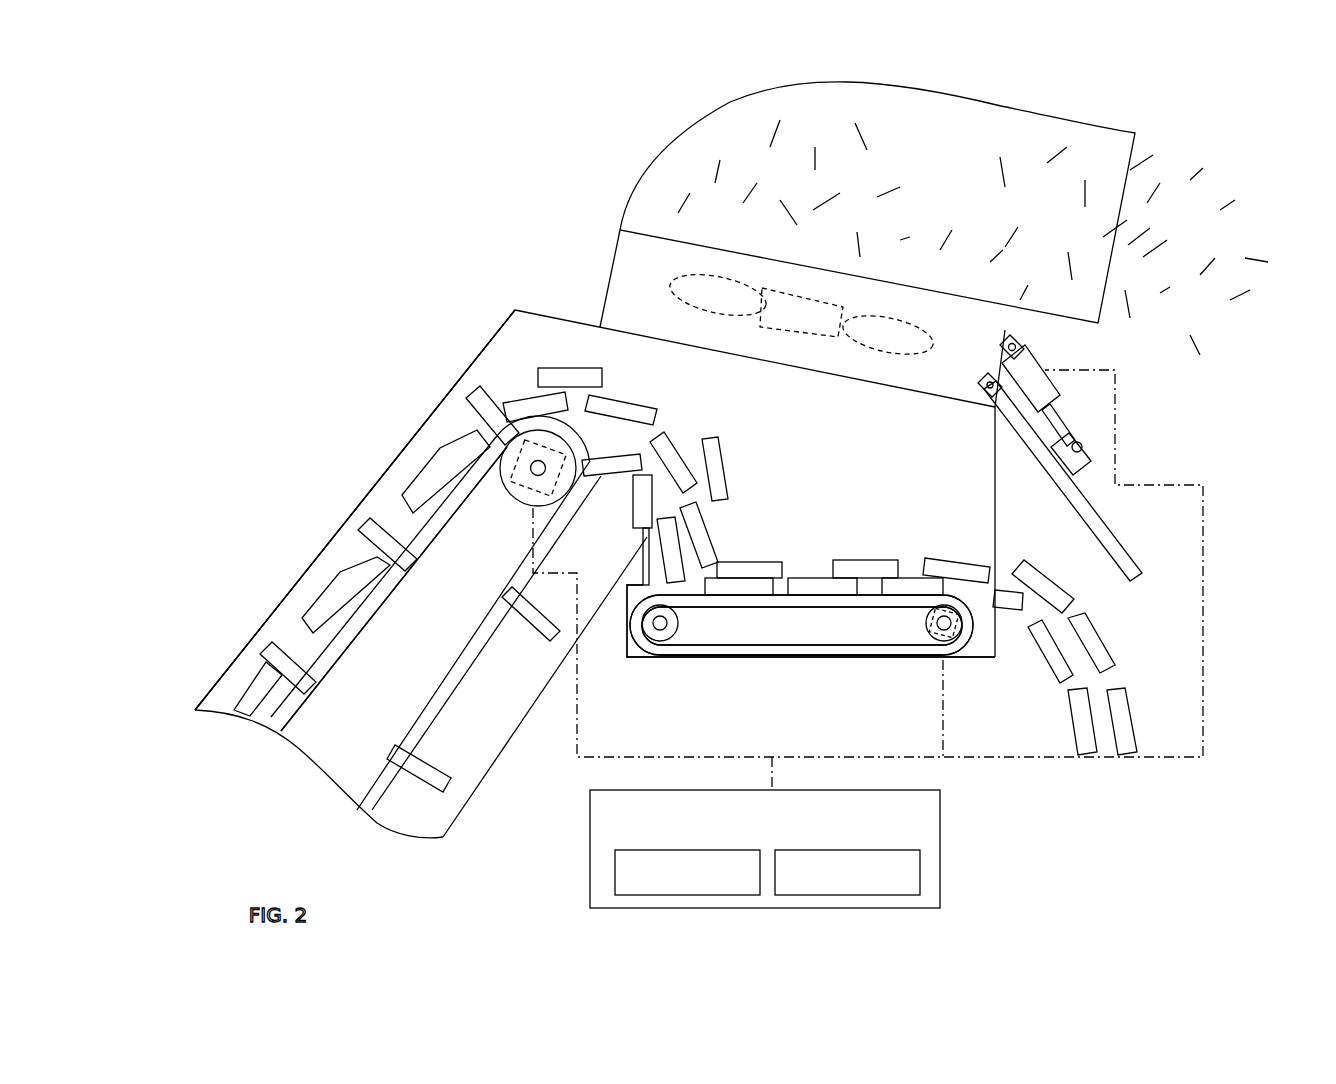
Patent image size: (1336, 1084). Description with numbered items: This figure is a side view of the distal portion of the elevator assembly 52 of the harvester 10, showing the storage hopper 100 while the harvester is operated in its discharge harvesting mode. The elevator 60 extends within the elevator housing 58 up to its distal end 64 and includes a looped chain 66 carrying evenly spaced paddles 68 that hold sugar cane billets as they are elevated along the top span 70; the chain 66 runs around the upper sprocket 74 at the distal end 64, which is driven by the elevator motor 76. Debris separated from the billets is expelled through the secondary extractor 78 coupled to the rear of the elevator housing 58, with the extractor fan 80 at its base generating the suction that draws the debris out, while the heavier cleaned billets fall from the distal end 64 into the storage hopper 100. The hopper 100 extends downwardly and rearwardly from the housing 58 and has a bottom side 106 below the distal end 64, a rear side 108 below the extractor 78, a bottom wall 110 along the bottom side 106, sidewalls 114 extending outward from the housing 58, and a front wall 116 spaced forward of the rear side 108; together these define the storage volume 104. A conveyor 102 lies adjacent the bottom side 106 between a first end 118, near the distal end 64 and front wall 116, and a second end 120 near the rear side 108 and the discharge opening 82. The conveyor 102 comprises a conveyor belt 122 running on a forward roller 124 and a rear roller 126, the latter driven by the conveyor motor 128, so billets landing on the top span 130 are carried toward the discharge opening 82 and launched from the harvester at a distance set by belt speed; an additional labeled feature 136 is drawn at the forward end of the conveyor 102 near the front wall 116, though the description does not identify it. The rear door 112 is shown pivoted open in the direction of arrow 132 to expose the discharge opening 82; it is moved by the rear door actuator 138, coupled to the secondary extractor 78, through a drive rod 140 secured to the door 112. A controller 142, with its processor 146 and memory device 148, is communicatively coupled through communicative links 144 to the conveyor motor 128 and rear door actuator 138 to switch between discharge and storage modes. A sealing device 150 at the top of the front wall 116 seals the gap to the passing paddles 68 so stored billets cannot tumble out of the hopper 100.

The harvester 10 is at (248, 410).
The elevator assembly 52 is at (223, 650).
The elevator housing 58 is at (220, 678).
The elevator 60 is at (445, 724).
The distal end 64 is at (528, 350).
The chain 66 is at (490, 690).
The paddles 68 is at (470, 390).
The top span 70 is at (340, 548).
The upper sprocket 74 is at (538, 508).
The elevator motor 76 is at (507, 490).
The secondary extractor 78 is at (1015, 108).
The extractor fan 80 is at (670, 282).
The discharge opening 82 is at (1005, 552).
The storage hopper 100 is at (1013, 508).
The conveyor 102 is at (700, 656).
The storage volume 104 is at (966, 428).
The bottom side 106 is at (877, 668).
The rear side 108 is at (1010, 645).
The bottom wall 110 is at (787, 658).
The rear door 112 is at (1123, 550).
The sidewalls 114 is at (846, 465).
The front wall 116 is at (625, 652).
The first end 118 is at (643, 661).
The second end 120 is at (972, 645).
The conveyor belt 122 is at (742, 646).
The forward roller 124 is at (655, 660).
The rear roller 126 is at (920, 618).
The conveyor motor 128 is at (913, 633).
The top span 130 is at (775, 582).
The arrow 132 is at (1172, 595).
The frame end 136 is at (625, 600).
The rear door actuator 138 is at (1050, 348).
The drive rod 140 is at (1068, 418).
The controller 142 is at (590, 822).
The communicative links 144 is at (576, 686).
The processor 146 is at (615, 873).
The memory device 148 is at (920, 873).
The sealing device 150 is at (633, 500).